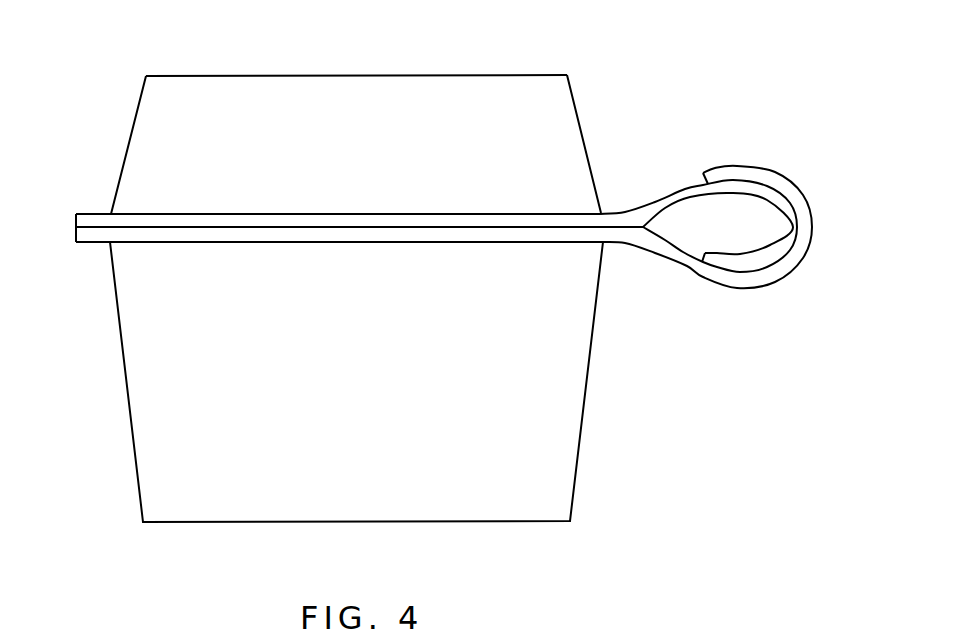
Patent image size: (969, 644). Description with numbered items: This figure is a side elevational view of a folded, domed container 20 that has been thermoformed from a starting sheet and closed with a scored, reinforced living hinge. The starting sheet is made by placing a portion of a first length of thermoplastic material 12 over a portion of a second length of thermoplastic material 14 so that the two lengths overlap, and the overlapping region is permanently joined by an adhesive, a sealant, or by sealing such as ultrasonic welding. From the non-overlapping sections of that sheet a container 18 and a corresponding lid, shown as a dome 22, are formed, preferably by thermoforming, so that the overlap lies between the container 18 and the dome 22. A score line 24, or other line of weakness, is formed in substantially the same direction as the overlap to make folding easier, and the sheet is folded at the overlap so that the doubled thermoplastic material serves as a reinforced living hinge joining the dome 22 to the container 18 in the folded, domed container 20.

The folded, domed container 20 is at (607, 80).
The container 18 is at (560, 486).
The dome 22 is at (504, 85).
The second length of thermoplastic material 14 is at (103, 218).
The first length of thermoplastic material 12 is at (77, 243).
The score line 24 is at (777, 232).